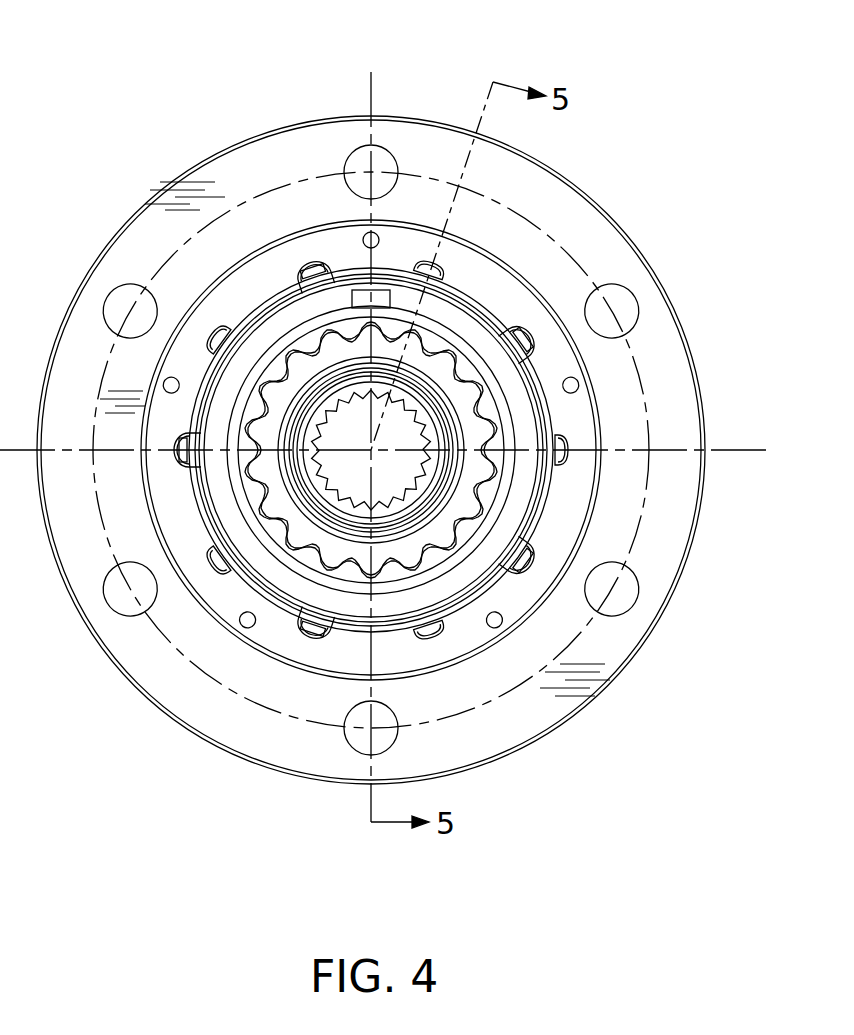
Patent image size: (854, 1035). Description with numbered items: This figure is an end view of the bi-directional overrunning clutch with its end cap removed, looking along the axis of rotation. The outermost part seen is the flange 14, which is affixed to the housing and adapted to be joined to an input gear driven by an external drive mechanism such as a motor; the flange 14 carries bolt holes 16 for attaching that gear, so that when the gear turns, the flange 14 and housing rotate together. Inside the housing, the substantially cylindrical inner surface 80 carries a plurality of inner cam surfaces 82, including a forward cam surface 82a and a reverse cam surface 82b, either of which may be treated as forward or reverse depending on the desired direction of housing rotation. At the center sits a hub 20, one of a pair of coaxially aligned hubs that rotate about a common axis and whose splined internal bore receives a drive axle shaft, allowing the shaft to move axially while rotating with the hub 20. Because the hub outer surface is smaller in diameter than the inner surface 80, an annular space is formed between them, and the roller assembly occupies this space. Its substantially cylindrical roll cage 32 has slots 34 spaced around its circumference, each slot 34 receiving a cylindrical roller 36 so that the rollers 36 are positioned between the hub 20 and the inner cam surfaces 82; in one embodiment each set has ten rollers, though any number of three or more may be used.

The flange 14 is at (425, 150).
The bolt holes 16 is at (370, 170).
The hub 20 is at (403, 385).
The roll cage 32 is at (427, 355).
The slots 34 is at (516, 324).
The rollers 36 is at (307, 270).
The inner surface 80 is at (482, 306).
The inner cam surfaces 82 is at (538, 350).
The forward cam surface 82a is at (565, 436).
The reverse cam surface 82b is at (567, 465).